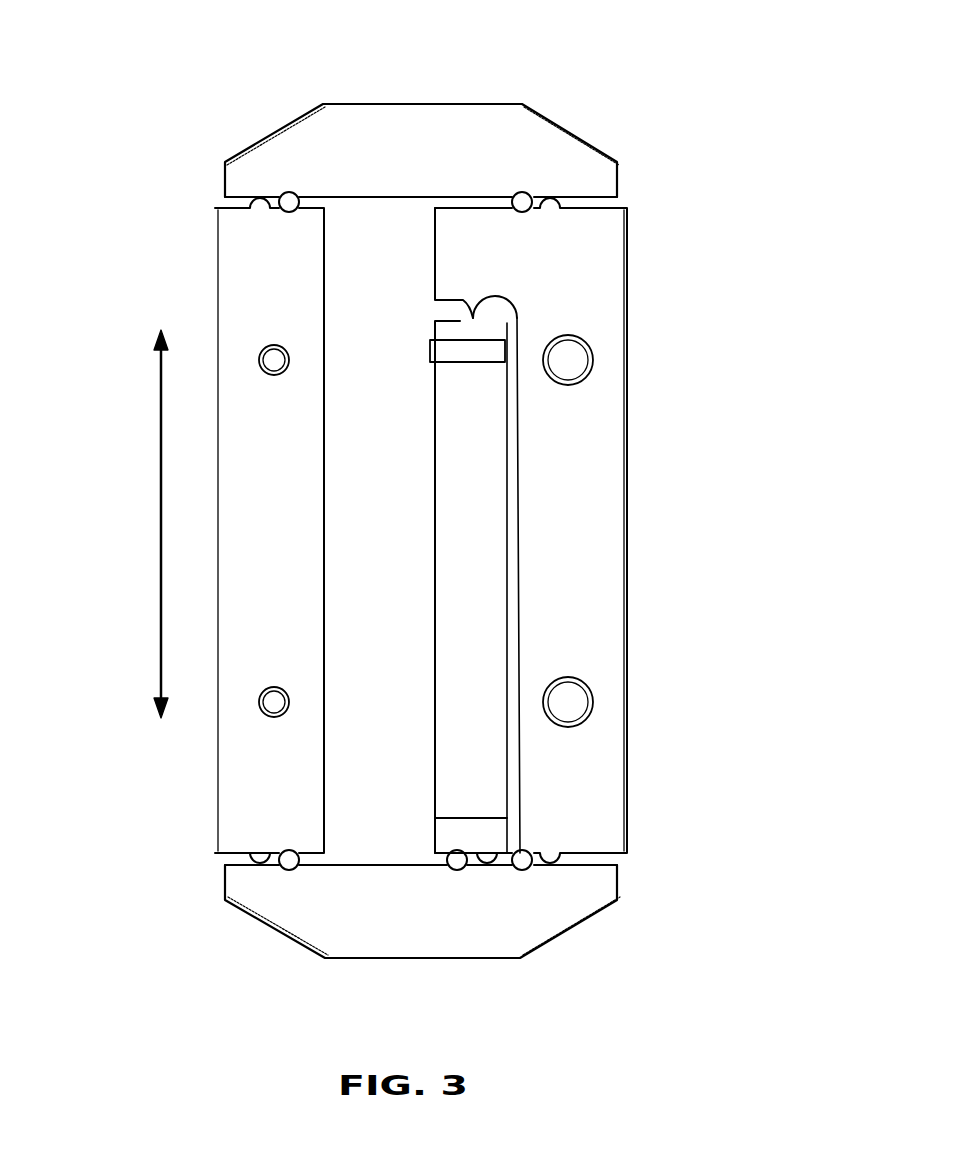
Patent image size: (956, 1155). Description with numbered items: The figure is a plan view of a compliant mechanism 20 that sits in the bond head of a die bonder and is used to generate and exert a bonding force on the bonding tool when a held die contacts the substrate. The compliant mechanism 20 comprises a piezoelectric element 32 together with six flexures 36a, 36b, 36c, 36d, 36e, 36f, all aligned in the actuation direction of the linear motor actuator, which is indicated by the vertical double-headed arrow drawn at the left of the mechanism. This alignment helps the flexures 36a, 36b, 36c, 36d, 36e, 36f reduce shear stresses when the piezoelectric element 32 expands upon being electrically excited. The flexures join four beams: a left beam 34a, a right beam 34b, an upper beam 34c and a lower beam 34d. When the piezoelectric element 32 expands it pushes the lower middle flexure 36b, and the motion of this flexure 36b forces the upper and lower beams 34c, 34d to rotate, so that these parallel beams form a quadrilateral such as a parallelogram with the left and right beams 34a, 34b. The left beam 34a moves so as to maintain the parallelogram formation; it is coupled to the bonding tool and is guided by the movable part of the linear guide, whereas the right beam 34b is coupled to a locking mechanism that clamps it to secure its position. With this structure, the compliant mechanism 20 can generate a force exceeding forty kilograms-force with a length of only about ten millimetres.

The compliant mechanism 20 is at (672, 68).
The piezoelectric element 32 is at (458, 520).
The left beam 34a is at (242, 283).
The right beam 34b is at (583, 282).
The upper beam 34c is at (458, 138).
The lower beam 34d is at (362, 920).
The flexure 36a is at (553, 860).
The lower middle flexure 36b is at (480, 862).
The flexure 36c is at (265, 862).
The flexure 36d is at (267, 198).
The flexure 36e is at (545, 205).
The flexure 36f is at (483, 318).